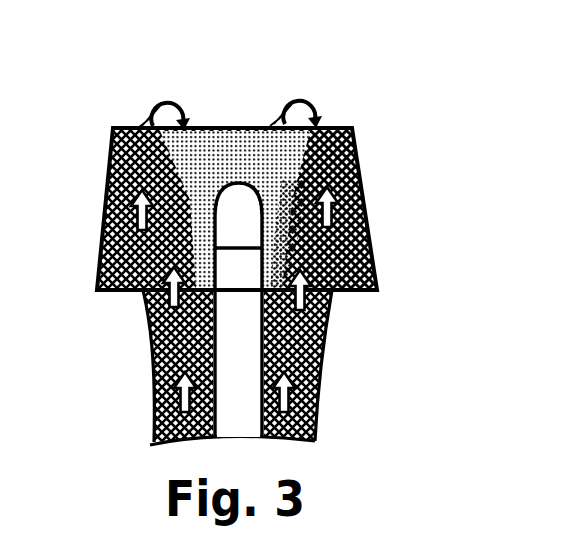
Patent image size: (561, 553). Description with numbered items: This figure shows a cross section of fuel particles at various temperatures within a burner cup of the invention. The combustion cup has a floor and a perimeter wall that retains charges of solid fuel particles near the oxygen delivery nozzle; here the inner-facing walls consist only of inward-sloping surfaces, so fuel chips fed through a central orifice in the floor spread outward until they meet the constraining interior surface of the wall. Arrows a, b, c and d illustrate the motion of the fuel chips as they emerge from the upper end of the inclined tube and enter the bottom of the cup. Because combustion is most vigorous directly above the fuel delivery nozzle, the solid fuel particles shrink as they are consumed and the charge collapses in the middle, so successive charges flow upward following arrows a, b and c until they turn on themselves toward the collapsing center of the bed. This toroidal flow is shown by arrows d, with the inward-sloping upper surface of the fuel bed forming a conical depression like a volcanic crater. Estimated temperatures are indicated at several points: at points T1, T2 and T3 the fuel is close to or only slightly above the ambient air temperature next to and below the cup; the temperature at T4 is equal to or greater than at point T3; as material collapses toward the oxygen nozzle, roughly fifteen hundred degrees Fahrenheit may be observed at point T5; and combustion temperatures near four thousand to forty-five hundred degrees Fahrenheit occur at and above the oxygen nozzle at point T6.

The temperature point T1 is at (293, 340).
The temperature point T2 is at (283, 151).
The temperature point T3 is at (342, 158).
The temperature point T4 is at (323, 125).
The temperature point T5 is at (291, 187).
The temperature point T6 is at (251, 153).
The arrow a is at (183, 397).
The arrow b is at (175, 292).
The arrow c is at (142, 212).
The arrow d is at (163, 103).